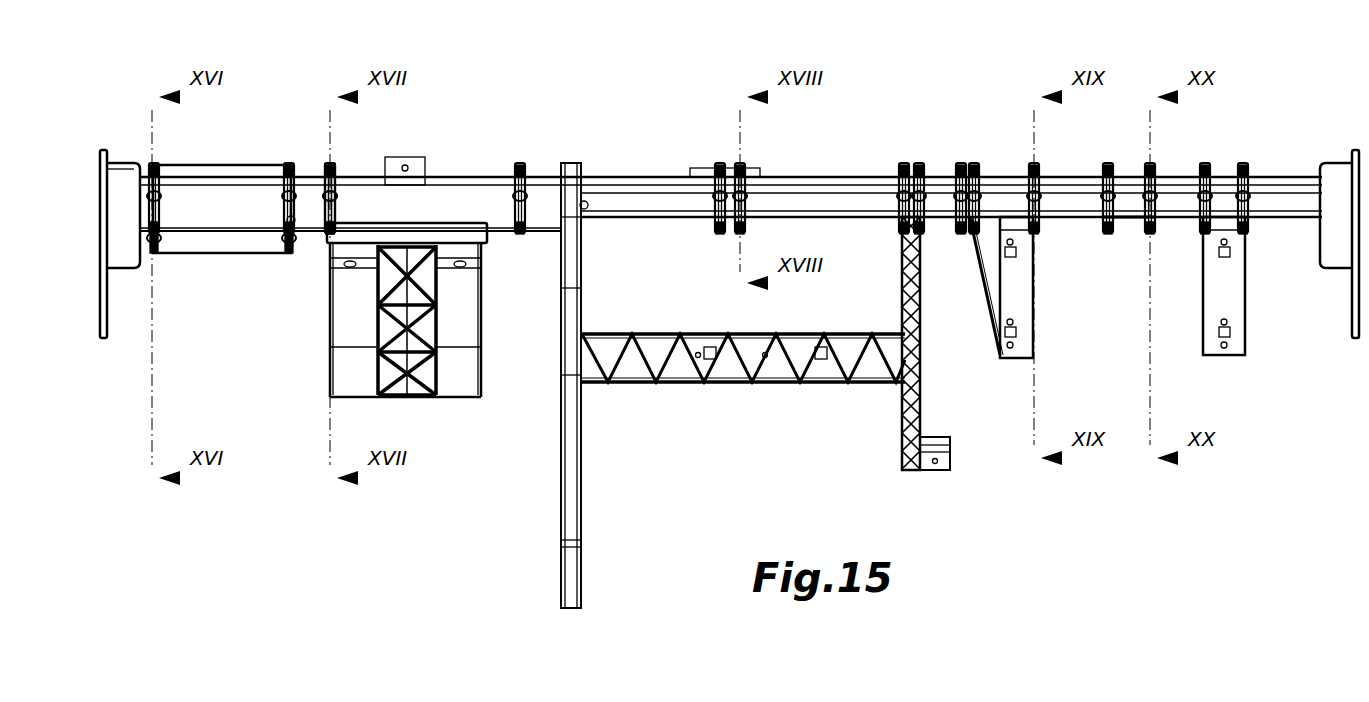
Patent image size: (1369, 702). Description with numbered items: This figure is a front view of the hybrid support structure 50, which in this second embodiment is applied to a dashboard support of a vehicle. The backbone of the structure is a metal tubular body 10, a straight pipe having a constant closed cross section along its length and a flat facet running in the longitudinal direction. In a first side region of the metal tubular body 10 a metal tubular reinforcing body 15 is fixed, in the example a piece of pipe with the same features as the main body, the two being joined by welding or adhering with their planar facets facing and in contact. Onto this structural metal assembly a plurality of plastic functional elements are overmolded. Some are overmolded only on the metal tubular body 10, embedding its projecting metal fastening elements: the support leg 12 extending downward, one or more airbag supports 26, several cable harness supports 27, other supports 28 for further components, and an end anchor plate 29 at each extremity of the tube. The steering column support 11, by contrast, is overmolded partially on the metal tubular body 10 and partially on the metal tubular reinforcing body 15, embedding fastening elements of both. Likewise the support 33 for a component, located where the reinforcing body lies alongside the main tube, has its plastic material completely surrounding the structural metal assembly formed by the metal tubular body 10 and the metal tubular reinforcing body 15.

The hybrid support structure 50 is at (588, 78).
The metal tubular body 10 is at (840, 177).
The steering column support 11 is at (463, 383).
The support leg 12 is at (570, 510).
The metal tubular reinforcing body 15 is at (312, 222).
The airbag support 26 is at (1105, 228).
The cable harness support 27 is at (700, 165).
The support for other components 28 is at (995, 302).
The end anchor plate 29 is at (113, 323).
The support for a component 33 is at (236, 165).